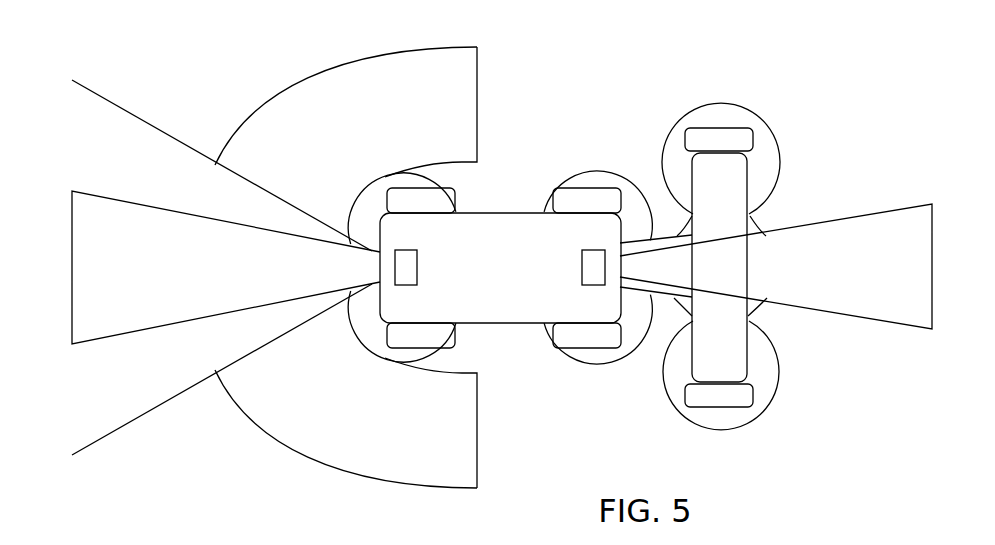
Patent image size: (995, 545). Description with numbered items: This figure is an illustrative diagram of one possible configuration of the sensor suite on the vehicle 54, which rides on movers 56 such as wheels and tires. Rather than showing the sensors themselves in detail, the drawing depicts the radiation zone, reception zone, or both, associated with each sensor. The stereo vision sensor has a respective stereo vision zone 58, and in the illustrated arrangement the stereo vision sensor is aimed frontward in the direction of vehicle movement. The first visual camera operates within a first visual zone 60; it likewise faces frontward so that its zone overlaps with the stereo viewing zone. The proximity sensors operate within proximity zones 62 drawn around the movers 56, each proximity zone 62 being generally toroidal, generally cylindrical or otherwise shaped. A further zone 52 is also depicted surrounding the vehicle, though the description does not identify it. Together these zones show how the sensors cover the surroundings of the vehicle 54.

The side detection zone 52 is at (338, 78).
The vehicle 54 is at (488, 257).
The movers 56 is at (446, 194).
The stereo vision zone 58 is at (152, 150).
The first visual zone 60 is at (187, 277).
The proximity zones 62 is at (368, 208).